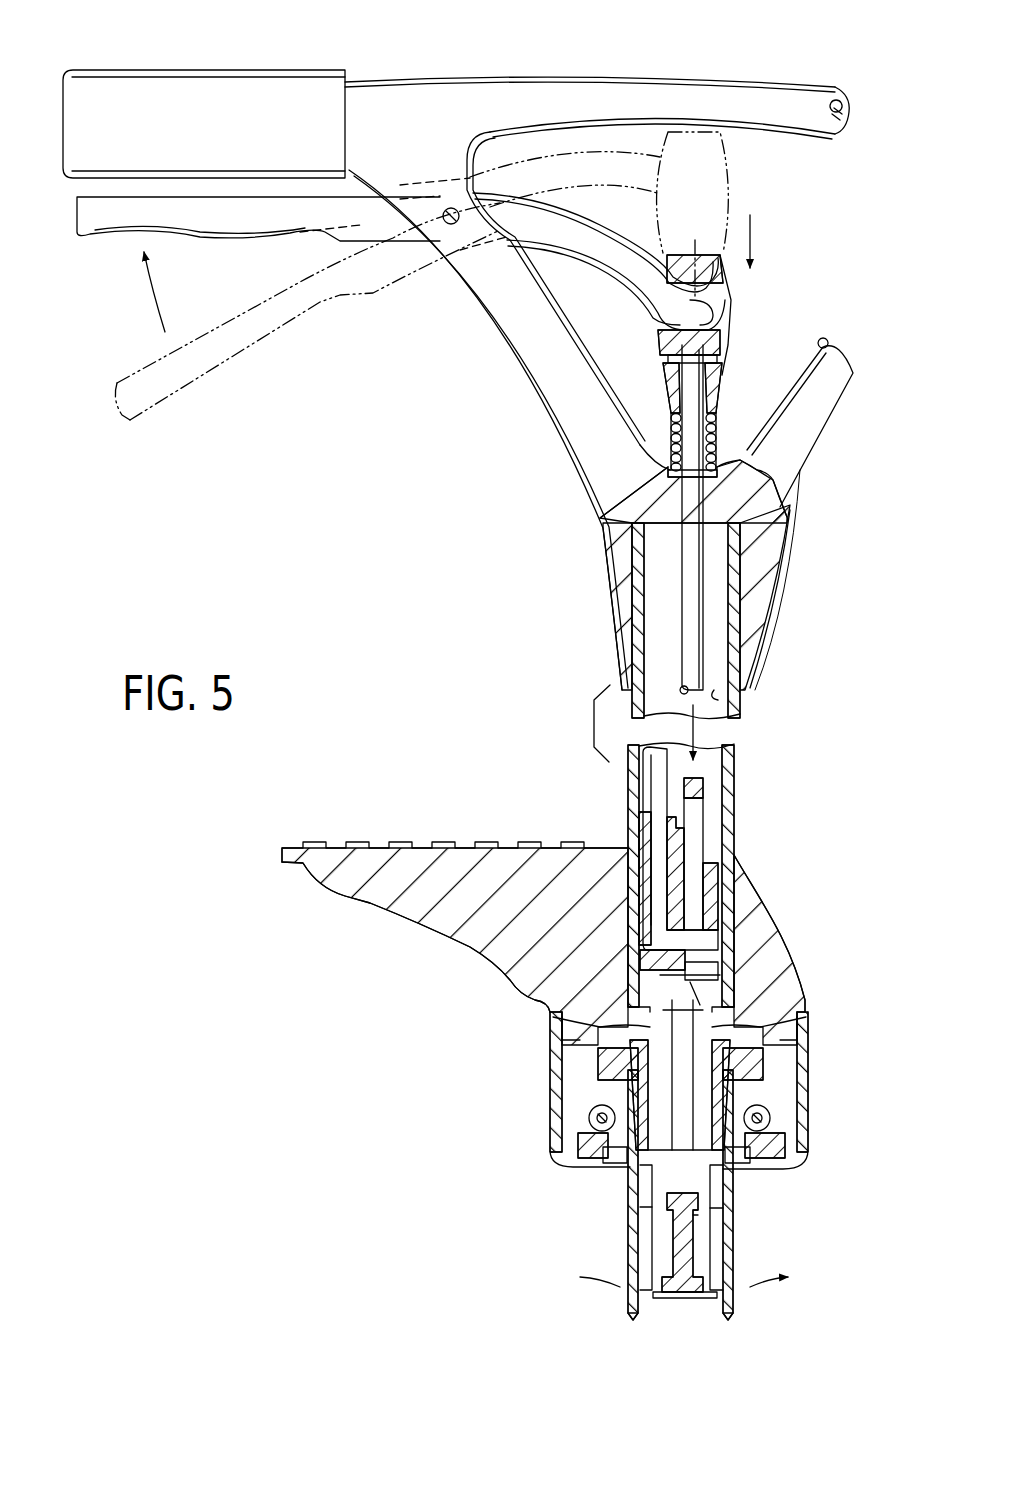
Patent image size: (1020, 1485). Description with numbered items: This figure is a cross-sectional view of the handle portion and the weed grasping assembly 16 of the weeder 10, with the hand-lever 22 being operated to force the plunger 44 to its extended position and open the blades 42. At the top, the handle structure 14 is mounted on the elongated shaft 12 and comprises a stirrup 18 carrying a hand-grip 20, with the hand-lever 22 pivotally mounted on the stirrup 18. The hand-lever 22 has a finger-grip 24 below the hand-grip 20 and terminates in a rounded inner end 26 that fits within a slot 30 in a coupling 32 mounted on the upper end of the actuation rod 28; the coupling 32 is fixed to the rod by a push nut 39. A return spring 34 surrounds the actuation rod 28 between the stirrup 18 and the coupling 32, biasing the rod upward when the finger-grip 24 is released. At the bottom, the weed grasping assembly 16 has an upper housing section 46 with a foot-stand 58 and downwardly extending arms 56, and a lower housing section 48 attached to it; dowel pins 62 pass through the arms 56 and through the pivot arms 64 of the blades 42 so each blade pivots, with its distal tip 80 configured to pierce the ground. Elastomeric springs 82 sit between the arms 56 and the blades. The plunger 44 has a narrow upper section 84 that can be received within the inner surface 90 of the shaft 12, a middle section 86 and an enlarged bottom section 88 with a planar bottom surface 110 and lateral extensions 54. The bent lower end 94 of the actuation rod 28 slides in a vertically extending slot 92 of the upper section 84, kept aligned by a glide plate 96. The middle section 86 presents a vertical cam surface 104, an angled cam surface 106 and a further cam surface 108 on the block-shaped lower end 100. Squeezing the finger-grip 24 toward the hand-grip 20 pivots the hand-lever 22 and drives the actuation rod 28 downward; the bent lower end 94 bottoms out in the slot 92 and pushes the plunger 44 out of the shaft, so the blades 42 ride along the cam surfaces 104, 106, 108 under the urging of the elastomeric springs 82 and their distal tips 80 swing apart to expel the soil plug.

The weeder 10 is at (498, 620).
The elongated shaft 12 is at (738, 795).
The handle structure 14 is at (652, 76).
The weed grasping assembly 16 is at (790, 962).
The stirrup 18 is at (548, 410).
The hand-grips 20 is at (214, 68).
The hand-lever 22 is at (244, 246).
The finger-grip 24 is at (201, 242).
The rounded inner end 26 is at (722, 305).
The actuation rod 28 is at (705, 636).
The slot 30 is at (662, 316).
The coupling 32 is at (732, 320).
The return spring 34 is at (728, 448).
The push nut 39 is at (668, 360).
The blades 42 is at (628, 1294).
The plunger 44 is at (722, 1190).
The upper housing section 46 is at (758, 912).
The lower housing section 48 is at (549, 1108).
The lateral extensions 54 is at (665, 1250).
The downwardly extending arms 56 is at (550, 1085).
The foot-stand 58 is at (383, 842).
The dowel pins 62 is at (589, 1120).
The pivot arms 64 is at (580, 1163).
The distal tip 80 is at (632, 1320).
The elastomeric springs 82 is at (598, 1050).
The upper section 84 is at (703, 790).
The middle section 86 is at (740, 990).
The enlarged bottom section 88 is at (712, 1250).
The inner surface 90 is at (716, 688).
The vertically extending slot 92 is at (704, 836).
The bent lower end 94 is at (736, 958).
The glide plate 96 is at (627, 825).
The block-shaped lower end 100 is at (626, 1222).
The vertical cam surface 104 is at (560, 1014).
The angled cam surface 106 is at (612, 1168).
The cam surface 108 is at (630, 1238).
The planar bottom surface 110 is at (684, 1302).